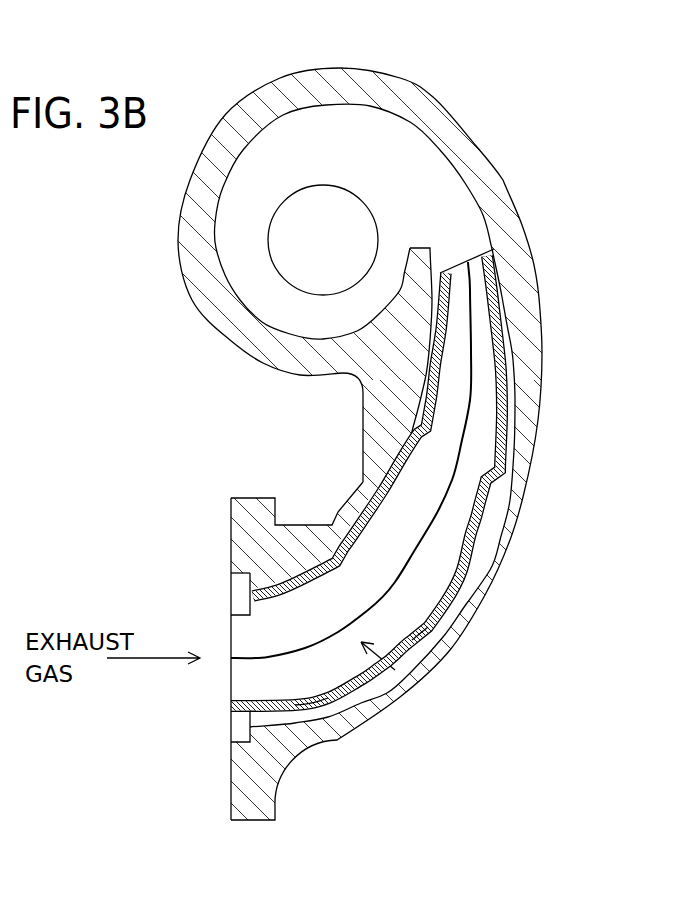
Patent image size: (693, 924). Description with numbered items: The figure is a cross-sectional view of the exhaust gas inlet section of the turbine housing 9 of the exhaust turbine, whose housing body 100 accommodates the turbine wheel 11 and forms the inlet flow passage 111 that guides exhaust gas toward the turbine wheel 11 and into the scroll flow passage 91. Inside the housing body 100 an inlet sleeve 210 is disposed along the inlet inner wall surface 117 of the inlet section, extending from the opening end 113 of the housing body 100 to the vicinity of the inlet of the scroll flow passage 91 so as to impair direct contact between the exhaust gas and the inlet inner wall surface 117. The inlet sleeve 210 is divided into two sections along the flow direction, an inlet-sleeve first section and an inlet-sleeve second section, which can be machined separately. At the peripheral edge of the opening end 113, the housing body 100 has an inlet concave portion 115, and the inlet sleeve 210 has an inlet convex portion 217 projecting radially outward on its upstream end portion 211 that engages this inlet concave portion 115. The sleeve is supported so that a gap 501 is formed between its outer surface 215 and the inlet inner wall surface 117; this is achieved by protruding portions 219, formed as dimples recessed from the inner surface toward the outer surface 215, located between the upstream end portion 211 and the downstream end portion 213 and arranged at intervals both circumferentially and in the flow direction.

The turbine housing 9 is at (0, 412).
The scroll flow passage 91 is at (413, 177).
The turbine wheel 11 is at (325, 218).
The downstream end portion 213 is at (484, 252).
The gap 501 is at (511, 412).
The housing body 100 is at (493, 558).
The inlet flow passage 111 is at (415, 671).
The inlet inner wall surface 117 is at (362, 440).
The inlet sleeve 210 is at (318, 556).
The inlet concave portion 115 is at (245, 576).
The inlet convex portion 217 is at (247, 606).
The opening end 113 is at (230, 686).
The upstream end portion 211 is at (240, 727).
The outer surface 215 is at (363, 723).
The protruding portion 219 is at (428, 630).